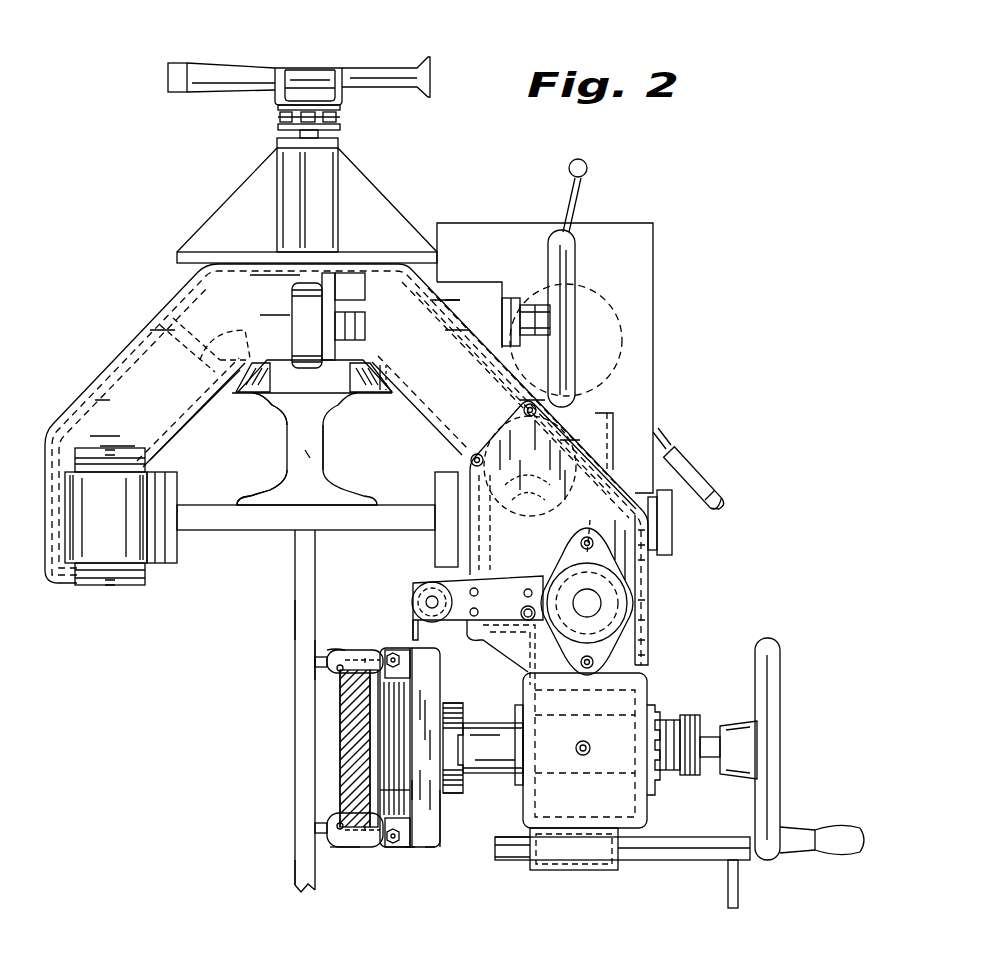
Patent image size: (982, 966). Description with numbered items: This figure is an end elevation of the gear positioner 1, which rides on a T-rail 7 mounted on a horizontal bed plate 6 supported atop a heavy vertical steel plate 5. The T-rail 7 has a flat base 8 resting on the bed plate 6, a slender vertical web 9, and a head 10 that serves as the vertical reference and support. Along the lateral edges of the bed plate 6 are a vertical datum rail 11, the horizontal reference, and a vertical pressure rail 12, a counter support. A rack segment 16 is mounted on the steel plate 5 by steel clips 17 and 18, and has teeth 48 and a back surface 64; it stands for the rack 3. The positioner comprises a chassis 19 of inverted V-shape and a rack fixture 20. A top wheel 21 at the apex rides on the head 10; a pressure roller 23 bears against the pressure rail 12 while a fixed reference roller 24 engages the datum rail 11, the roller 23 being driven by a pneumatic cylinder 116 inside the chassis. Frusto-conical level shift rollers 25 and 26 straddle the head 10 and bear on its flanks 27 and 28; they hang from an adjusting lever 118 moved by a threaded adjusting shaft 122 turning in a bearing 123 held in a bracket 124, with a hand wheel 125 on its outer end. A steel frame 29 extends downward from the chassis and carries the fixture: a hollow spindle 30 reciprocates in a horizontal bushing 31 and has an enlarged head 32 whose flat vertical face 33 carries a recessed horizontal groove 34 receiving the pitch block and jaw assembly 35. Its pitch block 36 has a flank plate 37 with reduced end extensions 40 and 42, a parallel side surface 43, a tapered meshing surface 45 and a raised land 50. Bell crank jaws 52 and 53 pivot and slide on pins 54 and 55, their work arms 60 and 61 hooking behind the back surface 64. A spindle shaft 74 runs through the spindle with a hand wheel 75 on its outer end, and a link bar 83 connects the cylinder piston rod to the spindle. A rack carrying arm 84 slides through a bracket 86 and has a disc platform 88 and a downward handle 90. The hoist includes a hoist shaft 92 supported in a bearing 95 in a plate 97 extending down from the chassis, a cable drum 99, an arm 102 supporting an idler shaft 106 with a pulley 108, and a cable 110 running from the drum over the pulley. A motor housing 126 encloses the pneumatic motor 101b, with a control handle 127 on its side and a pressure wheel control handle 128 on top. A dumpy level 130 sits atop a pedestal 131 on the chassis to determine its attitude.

The gear positioner 1 is at (447, 215).
The rack 3 is at (338, 772).
The vertical steel plate 5 is at (300, 613).
The horizontal bed plate 6 is at (295, 560).
The T-rail 7 is at (352, 398).
The flat base 8 is at (250, 490).
The vertical web 9 is at (325, 440).
The head 10 is at (250, 395).
The datum rail 11 is at (178, 550).
The pressure rail 12 is at (440, 565).
The rack segment 16 is at (340, 702).
The steel clip 17 is at (318, 650).
The steel clip 18 is at (310, 878).
The chassis 19 is at (178, 318).
The rack fixture 20 is at (452, 800).
The top wheel 21 is at (292, 300).
The pressure roller 23 is at (478, 455).
The reference roller 24 is at (122, 518).
The frusto-conical roller 25 is at (246, 380).
The frusto-conical roller 26 is at (372, 375).
The flank 27 is at (225, 397).
The flank 28 is at (392, 378).
The steel frame 29 is at (650, 625).
The spindle 30 is at (524, 702).
The horizontal bushing 31 is at (614, 725).
The enlarged head 32 is at (453, 708).
The flat vertical face 33 is at (458, 715).
The horizontal groove 34 is at (445, 762).
The pitch block and jaw assembly 35 is at (423, 852).
The pitch block 36 is at (385, 795).
The flank plate 37 is at (412, 792).
The reduced end extension 40 is at (393, 652).
The reduced end extension 42 is at (392, 847).
The parallel side surface 43 is at (410, 752).
The tapered meshing surface 45 is at (392, 697).
The rack tooth 48 is at (410, 847).
The raised land 50 is at (458, 782).
The bell crank jaw 52 is at (355, 648).
The bell crank jaw 53 is at (338, 826).
The pin 54 is at (395, 660).
The pin 55 is at (430, 848).
The work arm 60 is at (338, 660).
The work arm 61 is at (335, 848).
The back surface 64 is at (340, 738).
The spindle shaft 74 is at (710, 745).
The hand wheel 75 is at (783, 662).
The link bar 83 is at (672, 725).
The rack carrying arm 84 is at (672, 860).
The bracket 86 is at (598, 870).
The disc platform 88 is at (495, 840).
The handle 90 is at (740, 890).
The hoist shaft 92 is at (600, 605).
The bearing 95 is at (625, 613).
The plate 97 is at (660, 527).
The cable drum 99 is at (614, 520).
The pneumatic motor 101b is at (620, 348).
The arm 102 is at (508, 590).
The idler shaft 106 is at (412, 602).
The pulley 108 is at (414, 584).
The cable 110 is at (518, 525).
The pneumatic cylinder 116 is at (718, 502).
The adjusting lever 118 is at (225, 338).
The adjusting shaft 122 is at (572, 318).
The bearing 123 is at (512, 298).
The bracket 124 is at (482, 280).
The hand wheel 125 is at (575, 255).
The motor housing 126 is at (655, 247).
The control handle 127 is at (700, 468).
The pressure wheel control handle 128 is at (590, 170).
The dumpy level 130 is at (316, 66).
The pedestal 131 is at (372, 186).